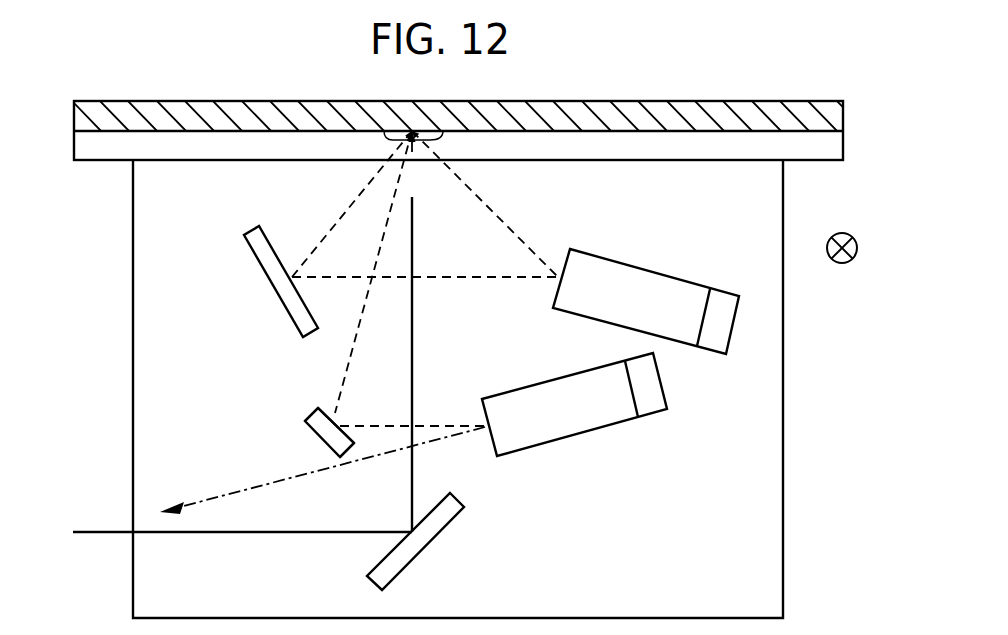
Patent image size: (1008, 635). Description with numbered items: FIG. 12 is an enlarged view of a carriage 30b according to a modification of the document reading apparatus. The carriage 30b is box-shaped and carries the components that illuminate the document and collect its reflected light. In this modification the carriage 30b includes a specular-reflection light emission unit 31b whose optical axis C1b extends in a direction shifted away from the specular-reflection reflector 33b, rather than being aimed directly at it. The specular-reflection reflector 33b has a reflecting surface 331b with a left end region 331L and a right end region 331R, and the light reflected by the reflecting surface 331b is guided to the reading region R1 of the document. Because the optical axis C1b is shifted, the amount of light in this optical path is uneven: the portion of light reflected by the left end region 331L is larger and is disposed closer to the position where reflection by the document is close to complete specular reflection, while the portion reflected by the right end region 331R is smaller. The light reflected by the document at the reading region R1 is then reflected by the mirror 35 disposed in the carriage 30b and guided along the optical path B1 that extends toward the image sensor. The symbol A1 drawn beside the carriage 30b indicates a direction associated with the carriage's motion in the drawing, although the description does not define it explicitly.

The reading region R1 is at (425, 272).
The axis direction indicator A1 is at (842, 229).
The carriage 30b is at (783, 357).
The specular-reflection light emission unit 31b is at (630, 423).
The specular-reflection reflector 33b is at (313, 436).
The reflecting surface 331b is at (333, 413).
The left end region 331L is at (320, 407).
The right end region 331R is at (355, 443).
The mirror 35 is at (430, 543).
The optical path B1 is at (112, 531).
The optical axis C1b is at (229, 494).